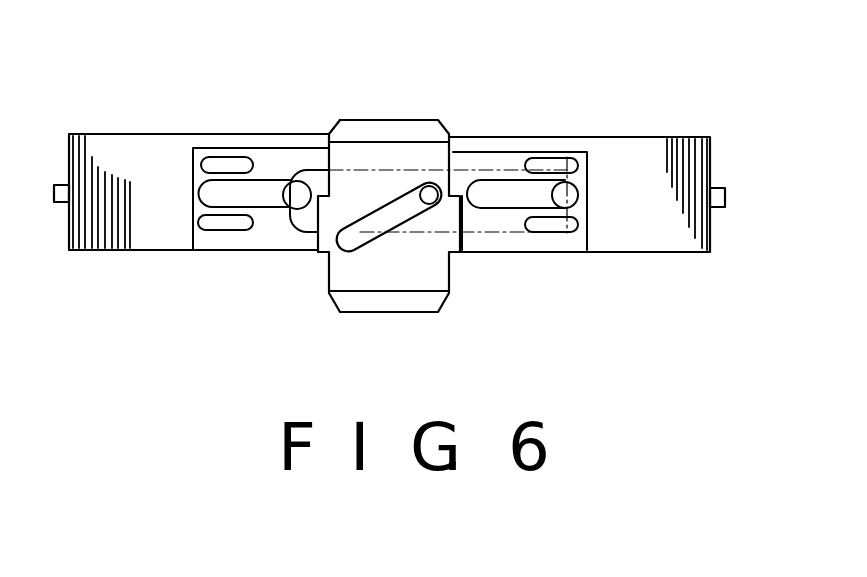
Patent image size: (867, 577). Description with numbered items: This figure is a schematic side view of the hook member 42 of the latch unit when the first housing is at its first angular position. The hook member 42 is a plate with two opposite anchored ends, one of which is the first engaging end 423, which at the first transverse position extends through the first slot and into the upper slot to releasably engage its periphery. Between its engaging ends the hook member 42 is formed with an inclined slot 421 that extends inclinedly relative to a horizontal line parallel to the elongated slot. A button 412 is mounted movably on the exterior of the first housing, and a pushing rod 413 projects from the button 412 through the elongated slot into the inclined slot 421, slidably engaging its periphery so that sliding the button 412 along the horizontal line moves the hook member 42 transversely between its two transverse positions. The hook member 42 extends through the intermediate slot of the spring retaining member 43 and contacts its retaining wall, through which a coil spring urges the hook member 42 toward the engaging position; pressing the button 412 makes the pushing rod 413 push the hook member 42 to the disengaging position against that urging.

The hook member 42 is at (320, 116).
The inclined slot 421 is at (398, 205).
The pushing rod 413 is at (438, 192).
The first engaging end 423 is at (338, 280).
The button 412 is at (492, 223).
The spring retaining member 43 is at (653, 253).